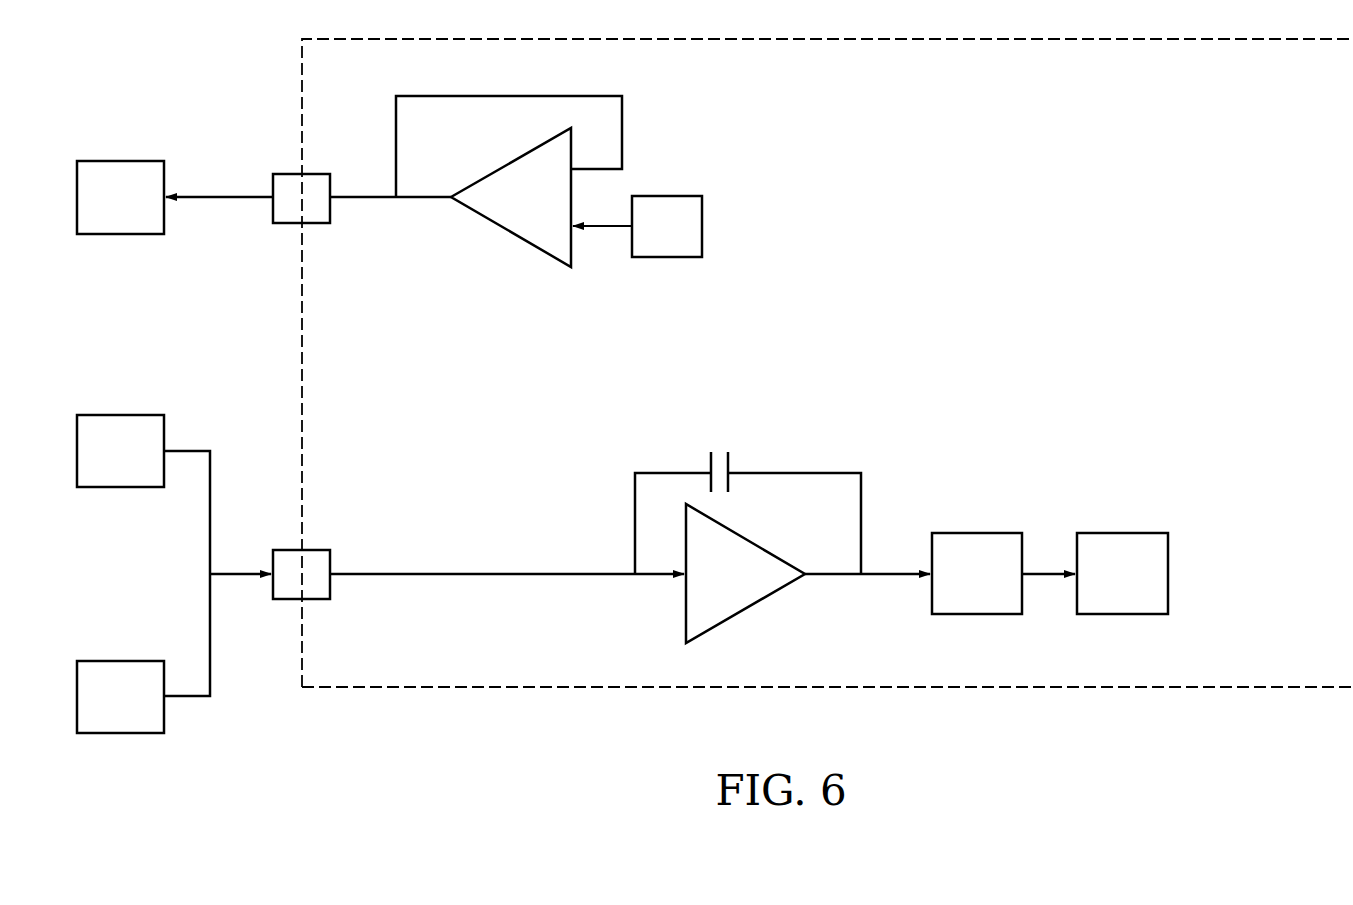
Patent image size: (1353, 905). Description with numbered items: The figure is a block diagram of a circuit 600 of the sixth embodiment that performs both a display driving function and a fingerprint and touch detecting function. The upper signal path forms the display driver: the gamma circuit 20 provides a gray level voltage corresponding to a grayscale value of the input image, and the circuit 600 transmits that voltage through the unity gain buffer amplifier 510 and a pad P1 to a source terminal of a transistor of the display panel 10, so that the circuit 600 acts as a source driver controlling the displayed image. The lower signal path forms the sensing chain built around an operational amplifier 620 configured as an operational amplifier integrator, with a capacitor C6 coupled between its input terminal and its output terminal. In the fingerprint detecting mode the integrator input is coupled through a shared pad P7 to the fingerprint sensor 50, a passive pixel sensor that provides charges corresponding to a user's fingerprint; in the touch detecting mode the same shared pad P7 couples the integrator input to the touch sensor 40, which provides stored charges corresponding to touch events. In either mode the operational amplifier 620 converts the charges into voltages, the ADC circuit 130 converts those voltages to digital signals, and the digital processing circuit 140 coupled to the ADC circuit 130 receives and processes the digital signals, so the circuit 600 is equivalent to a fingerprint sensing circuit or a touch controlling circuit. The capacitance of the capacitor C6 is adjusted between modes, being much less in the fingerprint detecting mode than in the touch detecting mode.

The display panel 10 is at (104, 213).
The gamma circuit 20 is at (651, 242).
The touch sensor 40 is at (104, 466).
The fingerprint sensor 50 is at (104, 712).
The ADC circuit 130 is at (953, 589).
The digital processing circuit 140 is at (1098, 589).
The unity gain buffer amplifier 510 is at (555, 211).
The circuit 600 is at (1284, 665).
The operational amplifier 620 is at (749, 589).
The pad P1 is at (286, 213).
The shared pad P7 is at (286, 588).
The capacitor C6 is at (748, 492).